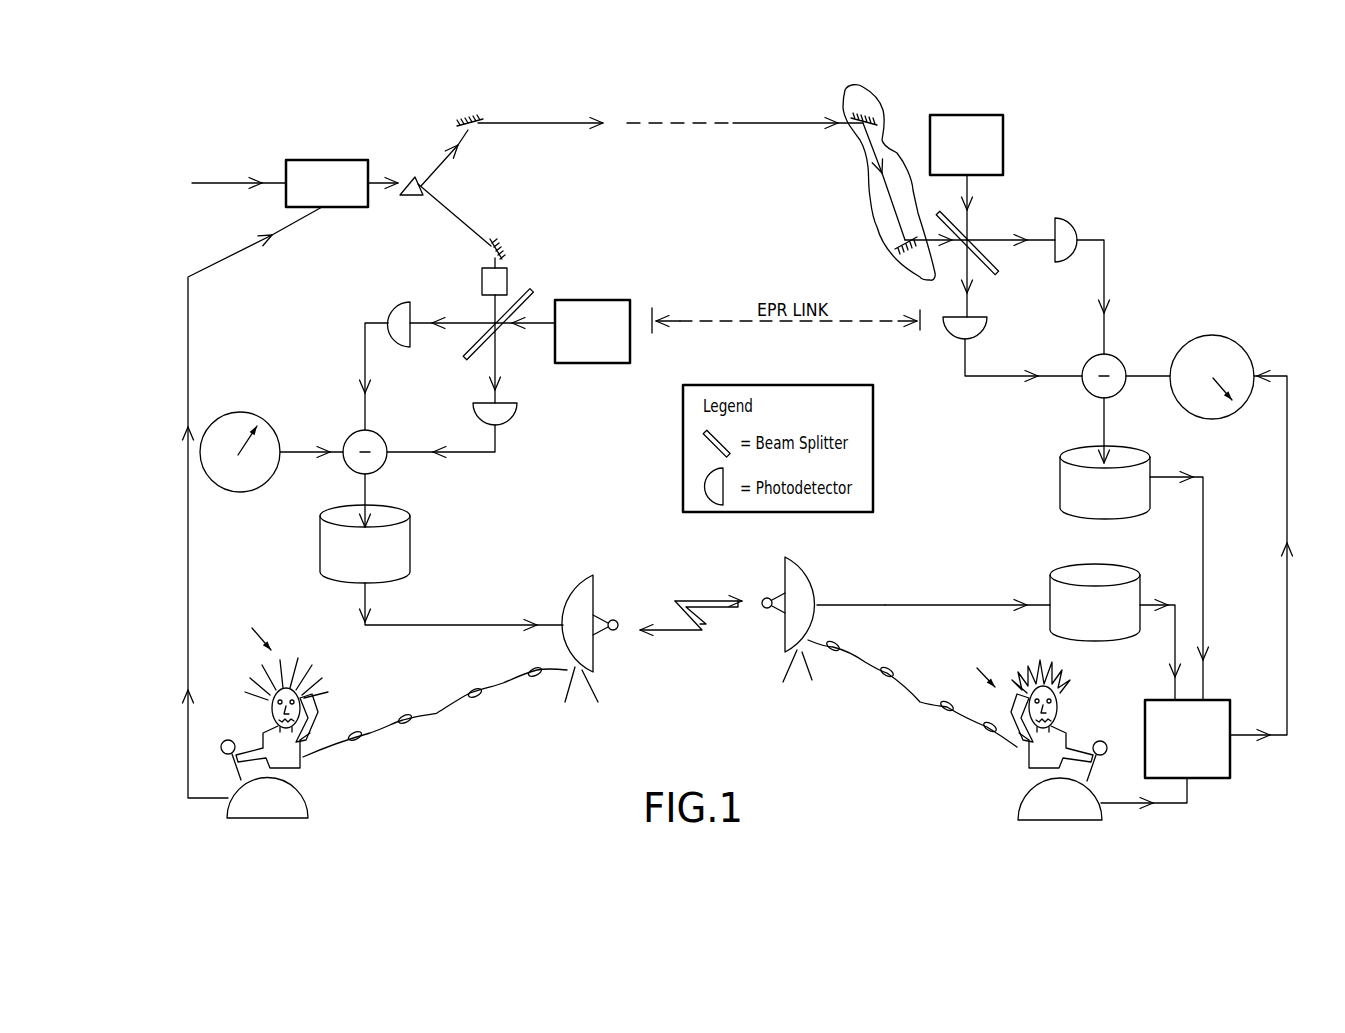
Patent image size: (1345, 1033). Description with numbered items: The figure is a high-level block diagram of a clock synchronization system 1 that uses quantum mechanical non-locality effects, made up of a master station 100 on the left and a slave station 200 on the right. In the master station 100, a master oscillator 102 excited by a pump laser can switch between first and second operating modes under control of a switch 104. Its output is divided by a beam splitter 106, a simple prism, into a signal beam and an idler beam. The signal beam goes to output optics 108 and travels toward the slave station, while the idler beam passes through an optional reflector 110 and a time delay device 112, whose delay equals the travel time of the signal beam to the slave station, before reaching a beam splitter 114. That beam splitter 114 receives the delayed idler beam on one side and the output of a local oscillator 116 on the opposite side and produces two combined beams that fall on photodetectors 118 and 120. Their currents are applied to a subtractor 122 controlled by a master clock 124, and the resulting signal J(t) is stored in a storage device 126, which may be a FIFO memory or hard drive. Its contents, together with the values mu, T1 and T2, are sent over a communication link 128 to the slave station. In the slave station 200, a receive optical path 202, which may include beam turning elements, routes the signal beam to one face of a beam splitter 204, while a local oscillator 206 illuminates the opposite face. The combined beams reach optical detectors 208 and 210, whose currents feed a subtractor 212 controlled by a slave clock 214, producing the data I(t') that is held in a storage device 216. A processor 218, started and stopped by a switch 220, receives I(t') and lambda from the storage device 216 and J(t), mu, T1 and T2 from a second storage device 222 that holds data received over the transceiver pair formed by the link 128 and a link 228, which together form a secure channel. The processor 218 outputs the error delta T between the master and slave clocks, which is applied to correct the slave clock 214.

The clock synchronization system 1 is at (641, 103).
The master station 100 is at (218, 108).
The master oscillator 102 is at (303, 159).
The switch 104 is at (312, 812).
The beam splitter 106 is at (413, 177).
The output optics 108 is at (466, 113).
The reflector 110 is at (503, 243).
The time delay device 112 is at (480, 281).
The beam splitter 114 is at (532, 291).
The local oscillator 116 is at (617, 300).
The photodetector 118 is at (392, 318).
The photodetector 120 is at (508, 421).
The subtractor 122 is at (384, 437).
The master clock 124 is at (268, 470).
The storage device 126 is at (414, 542).
The communication link 128 is at (573, 598).
The slave station 200 is at (1063, 112).
The receive optical path 202 is at (893, 132).
The beam splitter 204 is at (975, 233).
The local oscillator 206 is at (1005, 155).
The optical detector 208 is at (990, 320).
The optical detector 210 is at (1080, 222).
The subtractor 212 is at (1086, 360).
The slave clock 214 is at (1253, 345).
The storage device 216 is at (1058, 473).
The processor 218 is at (1233, 770).
The switch 220 is at (1020, 800).
The second storage device 222 is at (1052, 570).
The link 228 is at (810, 592).